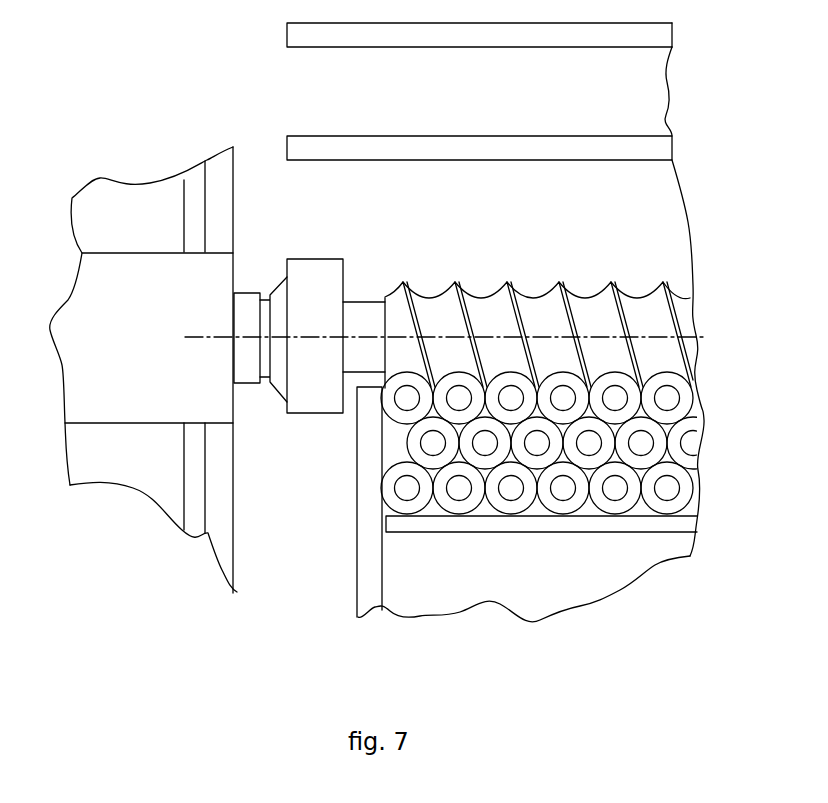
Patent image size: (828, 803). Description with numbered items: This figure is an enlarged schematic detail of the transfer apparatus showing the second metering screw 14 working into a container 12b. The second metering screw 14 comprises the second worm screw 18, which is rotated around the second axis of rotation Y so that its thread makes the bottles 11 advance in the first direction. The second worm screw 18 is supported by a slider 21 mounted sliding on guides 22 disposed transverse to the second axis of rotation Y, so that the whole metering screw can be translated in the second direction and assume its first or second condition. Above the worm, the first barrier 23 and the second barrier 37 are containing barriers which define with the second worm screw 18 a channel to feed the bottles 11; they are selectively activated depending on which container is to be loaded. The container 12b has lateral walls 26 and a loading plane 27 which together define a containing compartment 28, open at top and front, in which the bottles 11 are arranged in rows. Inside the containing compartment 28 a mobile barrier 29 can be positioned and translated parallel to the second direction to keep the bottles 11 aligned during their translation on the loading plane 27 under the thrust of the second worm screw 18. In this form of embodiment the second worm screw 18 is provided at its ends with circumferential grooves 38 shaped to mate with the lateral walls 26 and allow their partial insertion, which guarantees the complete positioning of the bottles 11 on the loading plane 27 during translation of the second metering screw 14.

The bottles 11 is at (690, 458).
The container 12b is at (396, 607).
The second metering screw 14 is at (671, 276).
The second worm screw 18 is at (685, 312).
The slider 21 is at (80, 320).
The guides 22 is at (195, 177).
The first barrier 23 is at (660, 35).
The lateral walls 26 is at (370, 603).
The loading plane 27 is at (551, 592).
The containing compartment 28 is at (382, 543).
The mobile barrier 29 is at (670, 523).
The second barrier 37 is at (658, 147).
The circumferential grooves 38 is at (363, 283).
The second axis of rotation Y is at (704, 337).